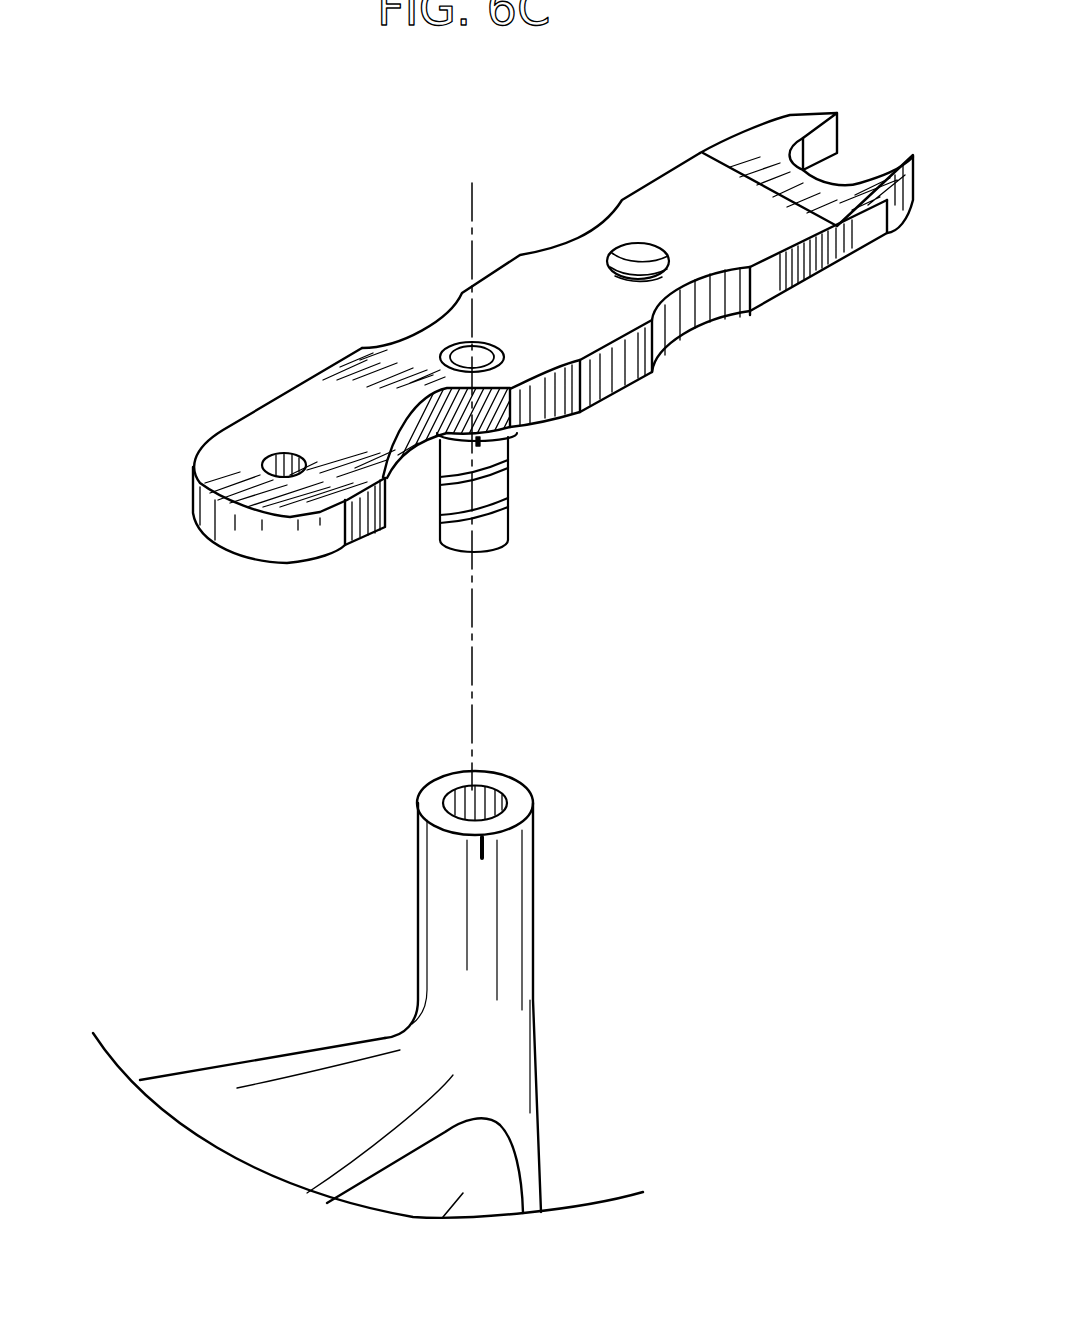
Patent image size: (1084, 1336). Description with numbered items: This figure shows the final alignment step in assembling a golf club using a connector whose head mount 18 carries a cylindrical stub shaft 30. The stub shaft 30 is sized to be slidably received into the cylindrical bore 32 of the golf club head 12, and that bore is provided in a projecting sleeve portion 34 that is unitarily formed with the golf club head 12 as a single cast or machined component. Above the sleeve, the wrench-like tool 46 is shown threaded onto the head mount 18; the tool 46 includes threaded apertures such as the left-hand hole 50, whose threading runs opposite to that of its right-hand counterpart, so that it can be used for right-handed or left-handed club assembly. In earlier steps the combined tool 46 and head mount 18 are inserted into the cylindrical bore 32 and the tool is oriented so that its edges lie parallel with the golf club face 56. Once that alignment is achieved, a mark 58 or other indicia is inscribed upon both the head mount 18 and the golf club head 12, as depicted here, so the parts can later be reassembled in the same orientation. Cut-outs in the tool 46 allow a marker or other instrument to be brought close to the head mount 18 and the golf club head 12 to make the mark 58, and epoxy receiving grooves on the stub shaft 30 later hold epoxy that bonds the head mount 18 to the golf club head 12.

The golf club head 12 is at (547, 1075).
The head mount 18 is at (655, 467).
The cylindrical stub shaft 30 is at (495, 498).
The cylindrical bore 32 is at (460, 787).
The projecting sleeve portion 34 is at (515, 893).
The tool 46 is at (623, 163).
The left-hand hole 50 is at (618, 248).
The golf club face 56 is at (405, 1202).
The mark 58 is at (490, 444).